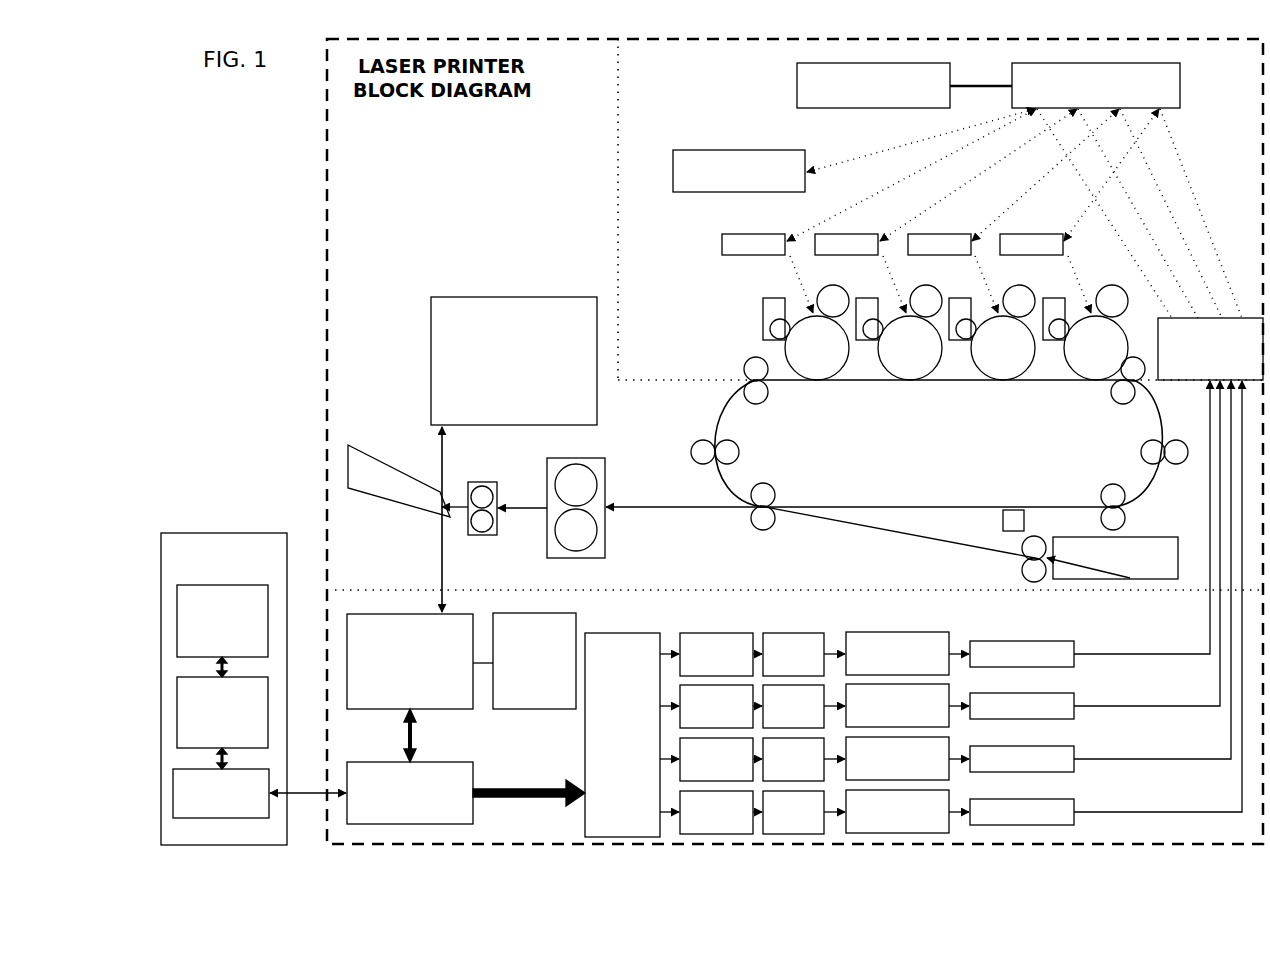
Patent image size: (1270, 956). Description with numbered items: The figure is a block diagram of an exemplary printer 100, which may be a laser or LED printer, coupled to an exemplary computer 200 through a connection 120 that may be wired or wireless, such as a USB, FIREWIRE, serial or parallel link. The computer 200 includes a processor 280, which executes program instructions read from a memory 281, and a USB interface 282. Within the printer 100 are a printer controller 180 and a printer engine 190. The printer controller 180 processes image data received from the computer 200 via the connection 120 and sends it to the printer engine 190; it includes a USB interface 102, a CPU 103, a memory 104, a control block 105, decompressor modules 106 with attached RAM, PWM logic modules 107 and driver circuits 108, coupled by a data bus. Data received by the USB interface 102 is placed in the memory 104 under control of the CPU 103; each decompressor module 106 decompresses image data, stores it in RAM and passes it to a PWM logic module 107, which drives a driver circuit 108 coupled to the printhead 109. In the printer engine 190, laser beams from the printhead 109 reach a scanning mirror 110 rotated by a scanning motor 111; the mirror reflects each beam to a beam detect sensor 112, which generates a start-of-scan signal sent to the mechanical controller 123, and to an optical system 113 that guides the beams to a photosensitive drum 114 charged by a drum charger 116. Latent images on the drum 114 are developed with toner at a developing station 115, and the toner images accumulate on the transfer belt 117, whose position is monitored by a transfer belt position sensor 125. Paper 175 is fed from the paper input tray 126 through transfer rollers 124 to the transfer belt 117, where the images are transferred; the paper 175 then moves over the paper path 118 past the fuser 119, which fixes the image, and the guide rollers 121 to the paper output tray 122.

The printer 100 is at (325, 362).
The USB interface 102 is at (466, 775).
The CPU 103 is at (420, 661).
The memory 104 is at (534, 661).
The control block 105 is at (632, 735).
The decompressor module 106 is at (762, 733).
The PWM logic module 107 is at (907, 732).
The driver circuit 108 is at (752, 360).
The printhead 109 is at (1150, 460).
The scanning mirror 110 is at (1096, 85).
The scanning motor 111 is at (904, 85).
The beam detect sensor 112 is at (854, 150).
The optical system 113 is at (748, 234).
The photosensitive drum 114 is at (1126, 347).
The developing station 115 is at (760, 318).
The drum charger 116 is at (972, 289).
The transfer belt 117 is at (718, 423).
The paper path 118 is at (695, 464).
The fuser 119 is at (605, 527).
The connection 120 is at (325, 790).
The guide rollers 121 is at (489, 479).
The paper output tray 122 is at (389, 467).
The mechanical controller 123 is at (514, 454).
The transfer rollers 124 is at (772, 528).
The transfer belt position sensor 125 is at (1000, 524).
The paper input tray 126 is at (1100, 559).
The paper 175 is at (897, 550).
The printer controller 180 is at (387, 590).
The printer engine 190 is at (617, 185).
The computer 200 is at (224, 689).
The processor 280 is at (222, 723).
The memory 281 is at (222, 631).
The USB interface 282 is at (221, 793).